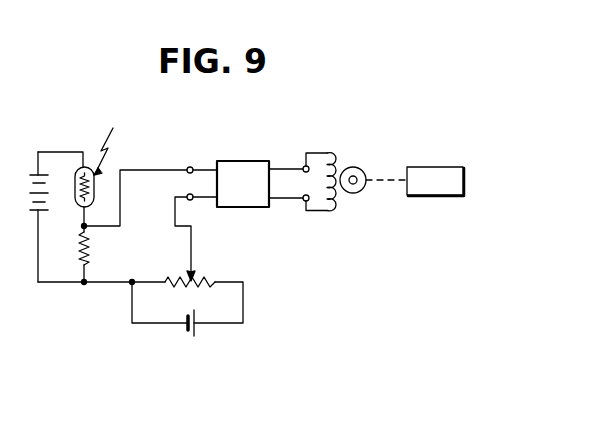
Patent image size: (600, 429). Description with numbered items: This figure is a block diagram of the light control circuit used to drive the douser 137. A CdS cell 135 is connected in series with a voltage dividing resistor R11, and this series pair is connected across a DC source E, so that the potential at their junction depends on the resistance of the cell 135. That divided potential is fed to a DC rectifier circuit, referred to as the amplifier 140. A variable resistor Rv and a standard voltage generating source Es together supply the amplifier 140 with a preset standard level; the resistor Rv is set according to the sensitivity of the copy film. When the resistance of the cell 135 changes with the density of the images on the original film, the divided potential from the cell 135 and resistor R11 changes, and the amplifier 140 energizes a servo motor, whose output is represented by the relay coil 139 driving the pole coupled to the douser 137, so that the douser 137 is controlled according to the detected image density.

The CdS cell 135 is at (73, 196).
The amplifier 140 is at (241, 161).
The relay coil 139 is at (327, 152).
The douser 137 is at (435, 167).
The DC source E is at (30, 192).
The voltage dividing resistor R11 is at (104, 251).
The variable resistor Rv is at (196, 275).
The standard voltage generating source Es is at (188, 336).